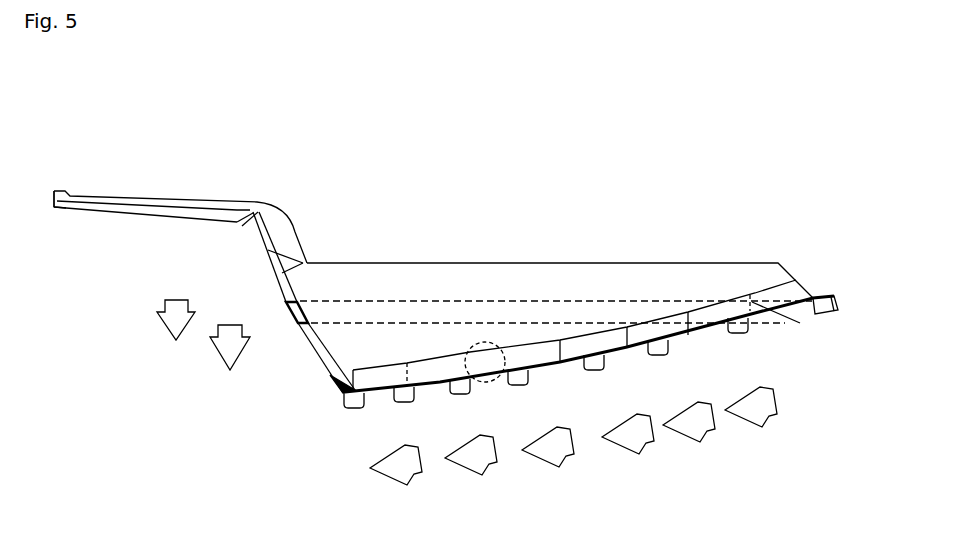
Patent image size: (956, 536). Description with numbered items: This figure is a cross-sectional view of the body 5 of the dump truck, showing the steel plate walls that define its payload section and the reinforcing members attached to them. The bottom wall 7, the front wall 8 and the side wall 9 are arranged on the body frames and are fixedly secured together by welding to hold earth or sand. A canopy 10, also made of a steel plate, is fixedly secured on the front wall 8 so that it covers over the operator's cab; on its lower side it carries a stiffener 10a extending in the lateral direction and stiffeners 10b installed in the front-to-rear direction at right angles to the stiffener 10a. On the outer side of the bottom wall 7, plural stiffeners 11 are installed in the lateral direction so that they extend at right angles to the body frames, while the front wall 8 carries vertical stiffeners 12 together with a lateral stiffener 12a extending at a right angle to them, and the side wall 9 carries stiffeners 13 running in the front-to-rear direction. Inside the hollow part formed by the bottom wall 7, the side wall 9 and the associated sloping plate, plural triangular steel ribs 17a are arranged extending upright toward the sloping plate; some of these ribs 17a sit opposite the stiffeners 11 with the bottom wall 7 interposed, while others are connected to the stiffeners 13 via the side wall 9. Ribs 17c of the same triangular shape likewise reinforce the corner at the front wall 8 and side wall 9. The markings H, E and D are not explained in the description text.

The body 5 is at (726, 261).
The bottom wall 7 is at (561, 363).
The front wall 8 is at (317, 352).
The side wall 9 is at (434, 268).
The canopy 10 is at (151, 197).
The stiffener 10a is at (245, 220).
The stiffener 10b is at (115, 212).
The stiffener 11 is at (403, 404).
The stiffener 12 is at (271, 265).
The stiffener 12a is at (289, 316).
The stiffener 13 is at (481, 300).
The rib 17a is at (487, 360).
The rib 17c is at (307, 300).
The hole H is at (491, 383).
The direction E is at (203, 335).
The direction D is at (573, 436).